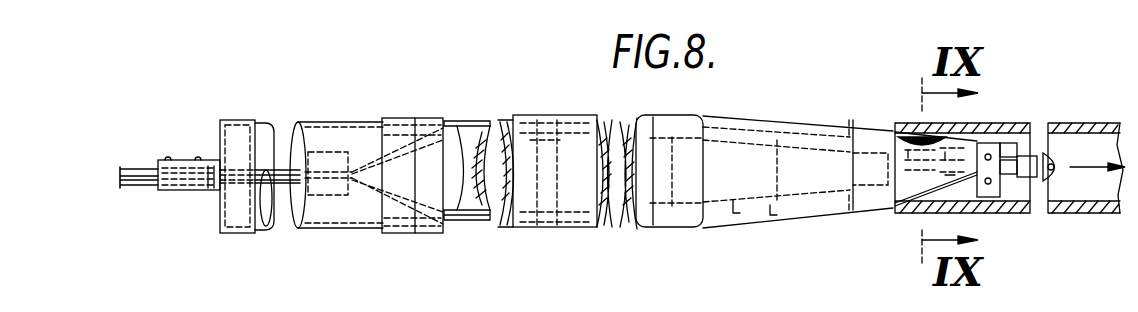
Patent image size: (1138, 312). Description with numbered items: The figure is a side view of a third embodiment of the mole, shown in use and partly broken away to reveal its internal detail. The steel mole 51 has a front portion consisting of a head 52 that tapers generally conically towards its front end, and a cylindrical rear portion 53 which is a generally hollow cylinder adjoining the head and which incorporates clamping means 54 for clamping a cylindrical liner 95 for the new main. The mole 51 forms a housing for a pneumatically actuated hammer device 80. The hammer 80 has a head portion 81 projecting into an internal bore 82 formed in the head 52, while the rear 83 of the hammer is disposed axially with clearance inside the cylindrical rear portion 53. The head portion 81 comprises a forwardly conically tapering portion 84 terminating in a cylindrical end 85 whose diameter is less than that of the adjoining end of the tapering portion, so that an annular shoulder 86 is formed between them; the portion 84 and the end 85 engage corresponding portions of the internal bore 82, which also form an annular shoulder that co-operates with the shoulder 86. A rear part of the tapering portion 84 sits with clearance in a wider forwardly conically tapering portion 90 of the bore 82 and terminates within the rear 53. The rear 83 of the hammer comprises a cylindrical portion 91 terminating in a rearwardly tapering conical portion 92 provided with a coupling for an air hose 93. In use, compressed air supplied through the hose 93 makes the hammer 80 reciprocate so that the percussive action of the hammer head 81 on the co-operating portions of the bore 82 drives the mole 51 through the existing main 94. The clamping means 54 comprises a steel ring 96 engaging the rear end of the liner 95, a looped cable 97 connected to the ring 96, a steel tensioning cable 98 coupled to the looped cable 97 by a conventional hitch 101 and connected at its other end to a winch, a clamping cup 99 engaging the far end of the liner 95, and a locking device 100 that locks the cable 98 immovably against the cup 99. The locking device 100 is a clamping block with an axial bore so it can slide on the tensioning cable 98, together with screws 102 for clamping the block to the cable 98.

The air hose 93 is at (142, 136).
The locking device 100 is at (175, 218).
The screws 102 is at (212, 122).
The tensioning cable 98 is at (202, 221).
The clamping cup 99 is at (264, 159).
The liner 95 is at (336, 156).
The clamping means 54 is at (320, 213).
The rearwardly tapering conical portion 92 is at (392, 201).
The hitch 101 is at (397, 158).
The looped cable 97 is at (412, 196).
The cylindrical rear portion 53 is at (469, 198).
The steel ring 96 is at (555, 195).
The cylindrical portion 91 is at (575, 107).
The rear of the hammer 83 is at (567, 196).
The pneumatically actuated hammer device 80 is at (669, 195).
The steel mole 51 is at (798, 104).
The head 52 is at (798, 240).
The wider forwardly conically tapering portion 90 is at (770, 107).
The forwardly conically tapering portion 84 is at (776, 207).
The internal bore 82 is at (784, 206).
The annular shoulder 86 is at (829, 143).
The head portion 81 is at (879, 131).
The cylindrical end 85 is at (953, 202).
The existing main 94 is at (1010, 143).